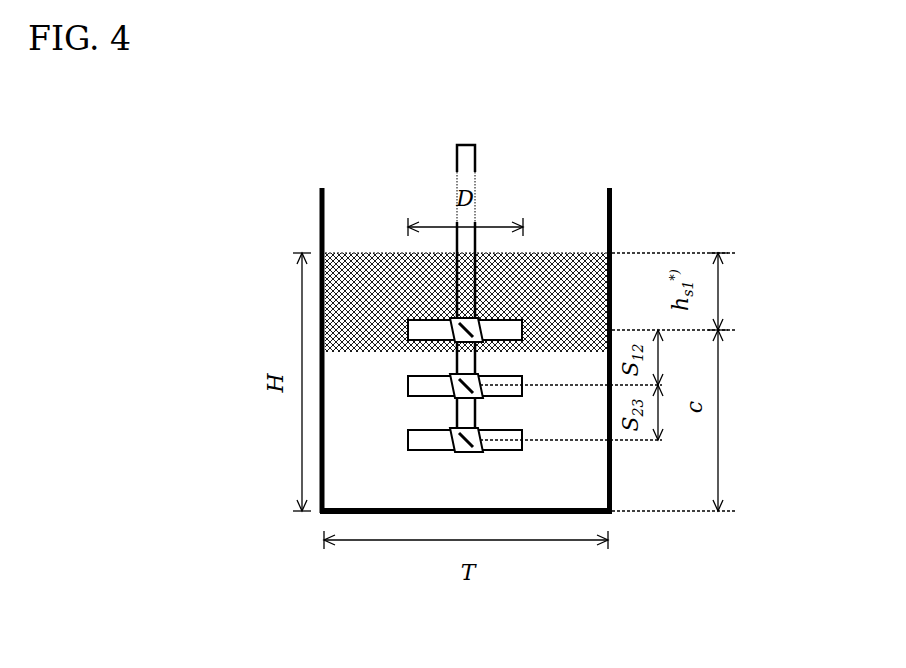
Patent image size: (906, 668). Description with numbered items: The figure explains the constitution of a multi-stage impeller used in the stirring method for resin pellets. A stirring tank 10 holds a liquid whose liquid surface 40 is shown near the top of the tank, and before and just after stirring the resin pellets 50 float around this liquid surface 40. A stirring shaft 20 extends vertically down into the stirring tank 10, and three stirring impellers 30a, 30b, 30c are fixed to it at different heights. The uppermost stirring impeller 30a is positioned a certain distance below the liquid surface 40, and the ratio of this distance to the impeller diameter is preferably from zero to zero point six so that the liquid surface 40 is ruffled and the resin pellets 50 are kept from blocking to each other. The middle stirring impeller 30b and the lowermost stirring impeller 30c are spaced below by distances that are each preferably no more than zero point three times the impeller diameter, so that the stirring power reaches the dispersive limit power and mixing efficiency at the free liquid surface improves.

The stirring tank 10 is at (612, 218).
The stirring shaft 20 is at (478, 152).
The stirring impeller 30a is at (522, 325).
The stirring impeller 30b is at (525, 386).
The stirring impeller 30c is at (408, 445).
The liquid surface 40 is at (343, 253).
The resin pellets 50 is at (528, 262).